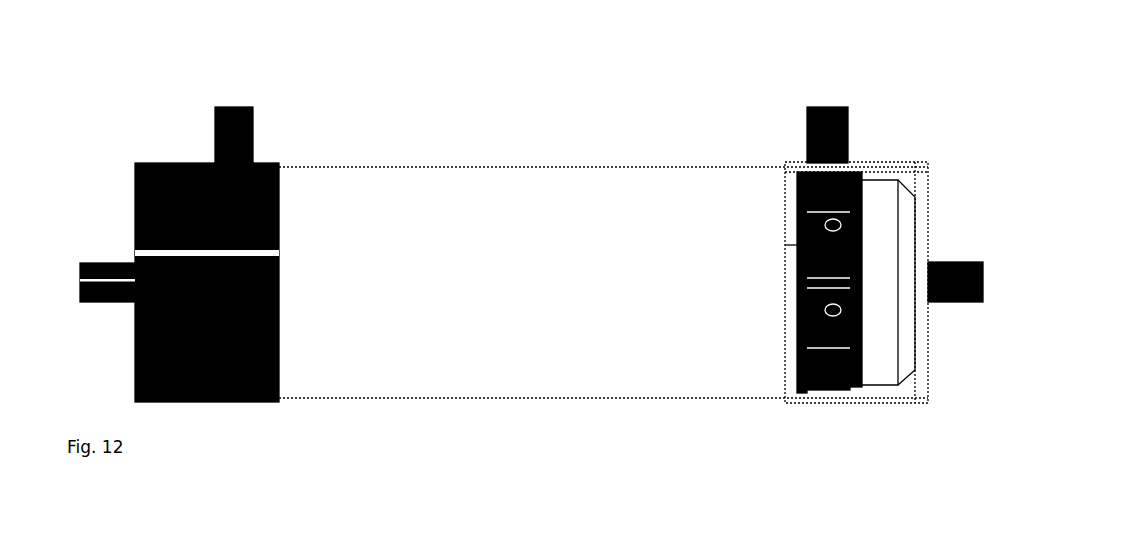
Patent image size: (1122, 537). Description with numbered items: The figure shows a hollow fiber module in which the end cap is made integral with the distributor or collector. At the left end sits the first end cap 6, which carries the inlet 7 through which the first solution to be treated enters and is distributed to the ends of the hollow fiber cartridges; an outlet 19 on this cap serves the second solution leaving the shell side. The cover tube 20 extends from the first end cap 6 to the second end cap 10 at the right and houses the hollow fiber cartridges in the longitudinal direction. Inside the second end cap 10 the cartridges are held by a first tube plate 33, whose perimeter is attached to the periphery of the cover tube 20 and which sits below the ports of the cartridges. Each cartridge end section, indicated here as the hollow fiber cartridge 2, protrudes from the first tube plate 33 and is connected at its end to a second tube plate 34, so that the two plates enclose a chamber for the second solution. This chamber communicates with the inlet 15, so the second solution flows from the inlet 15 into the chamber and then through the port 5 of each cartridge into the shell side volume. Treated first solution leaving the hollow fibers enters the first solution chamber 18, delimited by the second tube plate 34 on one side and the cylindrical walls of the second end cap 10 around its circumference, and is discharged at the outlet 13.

The sensor element 2 is at (825, 337).
The port 5 is at (820, 313).
The first end cap 6 is at (128, 197).
The inlet 7 is at (120, 305).
The second end cap 10 is at (905, 160).
The outlet 13 is at (943, 308).
The inlet 15 is at (832, 100).
The first solution chamber 18 is at (873, 360).
The outlet 19 is at (242, 102).
The cover tube 20 is at (444, 163).
The first tube plate 33 is at (792, 245).
The second tube plate 34 is at (865, 203).